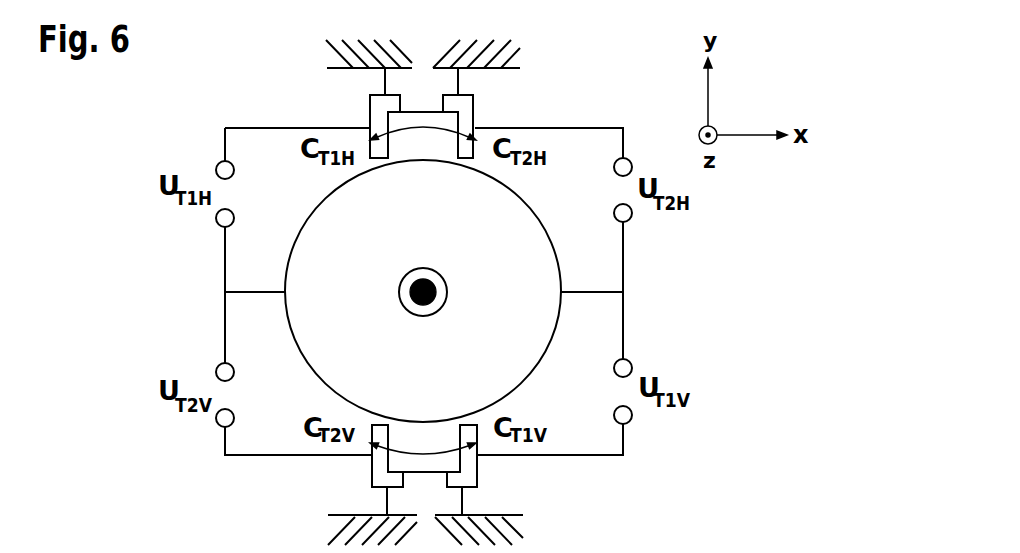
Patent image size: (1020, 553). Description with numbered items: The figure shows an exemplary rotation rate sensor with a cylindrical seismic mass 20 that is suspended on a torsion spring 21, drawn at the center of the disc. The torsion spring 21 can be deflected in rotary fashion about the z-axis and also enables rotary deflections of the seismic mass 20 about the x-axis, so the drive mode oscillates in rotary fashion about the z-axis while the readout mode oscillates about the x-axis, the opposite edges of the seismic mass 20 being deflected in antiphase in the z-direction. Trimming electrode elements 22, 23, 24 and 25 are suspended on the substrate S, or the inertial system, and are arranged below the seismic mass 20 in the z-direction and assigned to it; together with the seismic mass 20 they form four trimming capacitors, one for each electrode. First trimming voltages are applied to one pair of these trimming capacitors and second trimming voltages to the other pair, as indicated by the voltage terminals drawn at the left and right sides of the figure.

The seismic mass 20 is at (533, 225).
The torsion spring 21 is at (438, 284).
The trimming electrode element 22 is at (372, 112).
The trimming electrode element 23 is at (470, 105).
The trimming electrode element 24 is at (468, 472).
The trimming electrode element 25 is at (373, 480).
The substrate S is at (350, 53).